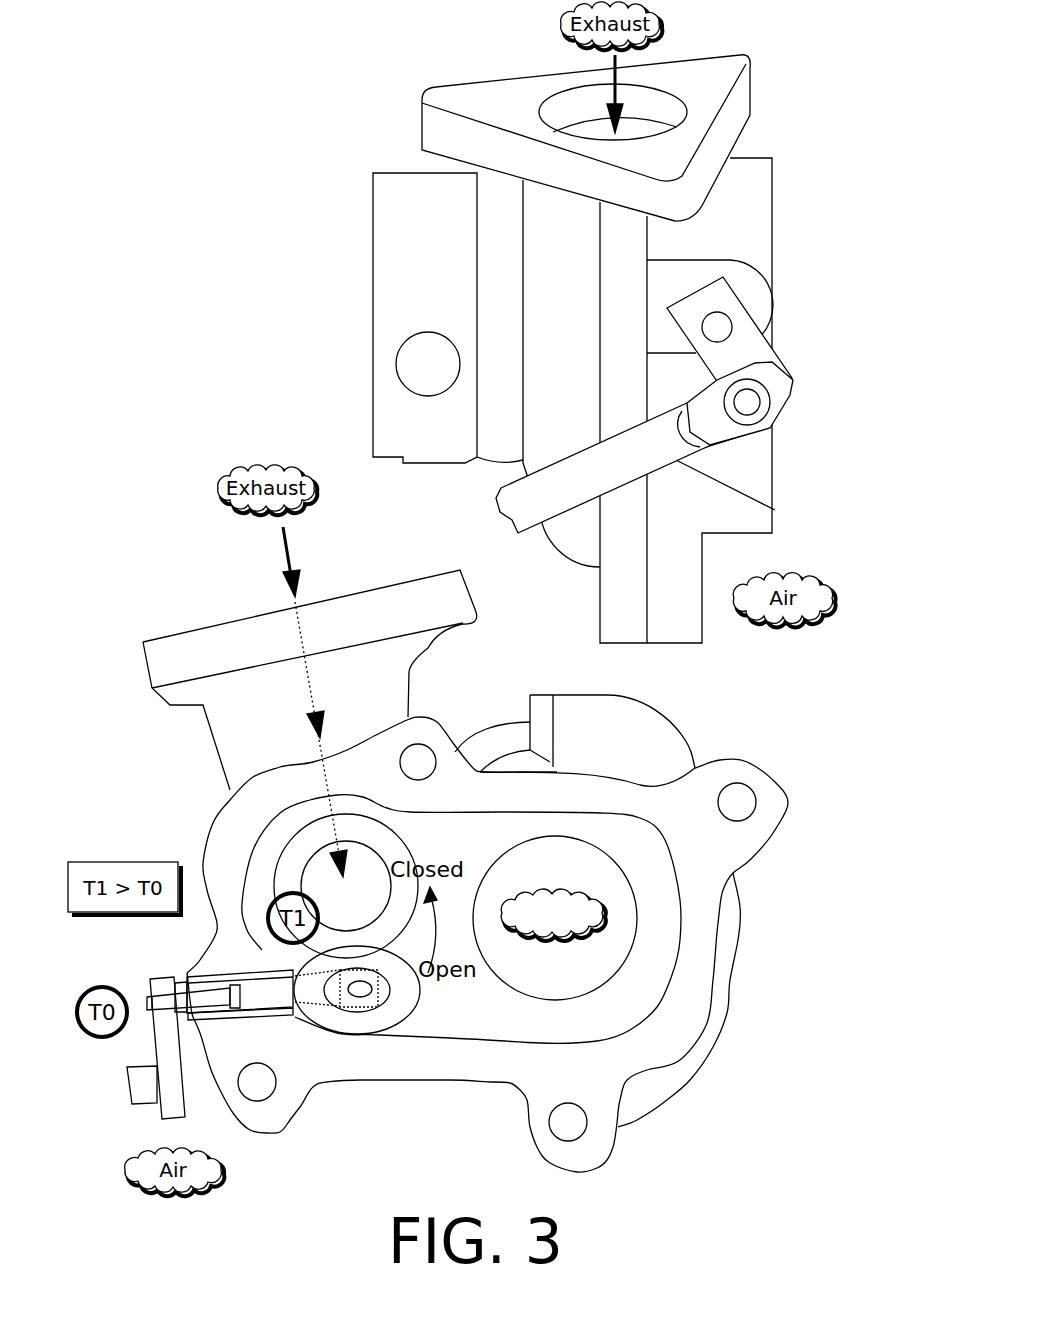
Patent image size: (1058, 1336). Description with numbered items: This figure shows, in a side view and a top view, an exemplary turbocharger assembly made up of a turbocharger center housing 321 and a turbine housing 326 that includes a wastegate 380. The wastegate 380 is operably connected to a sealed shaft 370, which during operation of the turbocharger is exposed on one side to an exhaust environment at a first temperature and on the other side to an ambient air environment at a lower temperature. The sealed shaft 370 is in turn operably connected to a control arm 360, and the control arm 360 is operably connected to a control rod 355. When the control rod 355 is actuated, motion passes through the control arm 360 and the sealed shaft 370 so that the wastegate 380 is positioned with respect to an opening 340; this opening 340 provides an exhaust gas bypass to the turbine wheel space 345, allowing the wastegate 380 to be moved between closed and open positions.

The turbocharger center housing 321 is at (373, 237).
The turbine housing 326 is at (773, 185).
The opening 340 is at (275, 859).
The turbine wheel space 345 is at (573, 876).
The control rod 355 is at (775, 510).
The control arm 360 is at (775, 352).
The sealed shaft 370 is at (728, 317).
The wastegate 380 is at (387, 997).